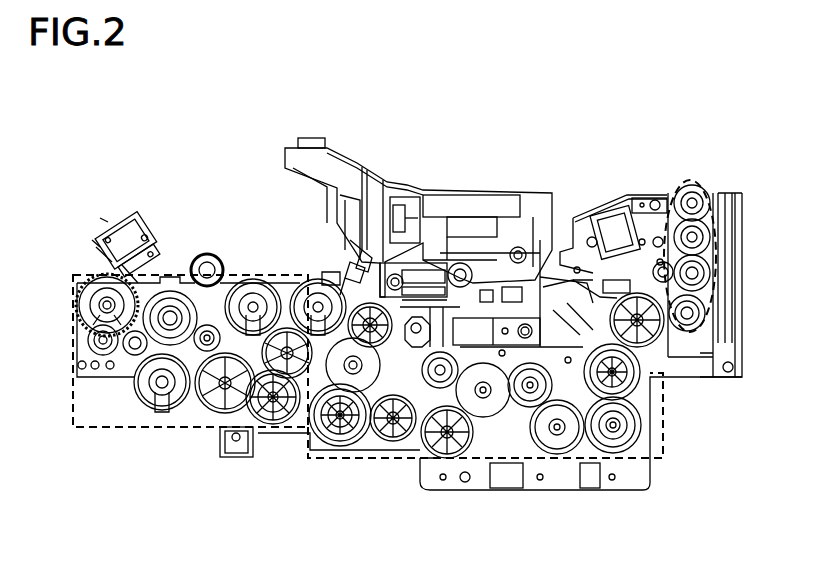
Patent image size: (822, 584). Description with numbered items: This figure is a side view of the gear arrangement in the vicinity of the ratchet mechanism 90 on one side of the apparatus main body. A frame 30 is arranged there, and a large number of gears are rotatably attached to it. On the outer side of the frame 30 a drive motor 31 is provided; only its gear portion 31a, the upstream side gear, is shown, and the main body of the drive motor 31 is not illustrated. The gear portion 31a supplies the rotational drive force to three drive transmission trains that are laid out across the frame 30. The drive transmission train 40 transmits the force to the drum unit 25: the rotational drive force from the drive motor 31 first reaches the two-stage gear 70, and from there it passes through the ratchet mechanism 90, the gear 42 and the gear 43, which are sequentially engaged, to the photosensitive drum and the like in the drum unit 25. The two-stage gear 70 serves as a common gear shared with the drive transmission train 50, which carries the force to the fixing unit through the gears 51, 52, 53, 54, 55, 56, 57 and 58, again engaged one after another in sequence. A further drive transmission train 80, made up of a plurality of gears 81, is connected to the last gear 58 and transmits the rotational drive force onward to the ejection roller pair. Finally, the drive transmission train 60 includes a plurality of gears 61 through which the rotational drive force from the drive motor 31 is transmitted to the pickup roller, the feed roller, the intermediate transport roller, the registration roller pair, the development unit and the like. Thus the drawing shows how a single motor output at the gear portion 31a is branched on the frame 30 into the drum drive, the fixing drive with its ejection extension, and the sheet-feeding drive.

The drum unit 25 is at (497, 227).
The frame 30 is at (640, 475).
The drive motor 31 is at (278, 550).
The gear portion 31a is at (293, 440).
The drive transmission train 40 is at (423, 260).
The gear 42 is at (357, 266).
The gear 43 is at (363, 258).
The drive transmission train 50 is at (372, 460).
The gear 51 is at (403, 441).
The gear 52 is at (447, 448).
The gear 53 is at (484, 400).
The gear 54 is at (518, 404).
The gear 55 is at (565, 438).
The gear 56 is at (620, 442).
The gear 57 is at (640, 382).
The gear 58 is at (647, 337).
The drive transmission train 60 is at (243, 273).
The gears 61 is at (105, 330).
The two-stage gear 70 is at (328, 447).
The drive transmission train 80 is at (708, 182).
The gears 81 is at (698, 237).
The ratchet mechanism 90 is at (330, 277).